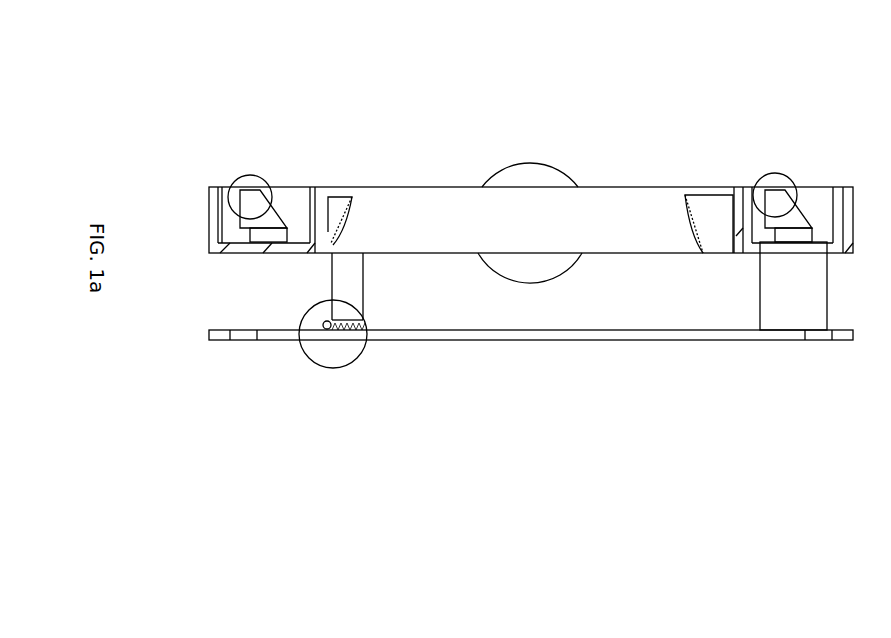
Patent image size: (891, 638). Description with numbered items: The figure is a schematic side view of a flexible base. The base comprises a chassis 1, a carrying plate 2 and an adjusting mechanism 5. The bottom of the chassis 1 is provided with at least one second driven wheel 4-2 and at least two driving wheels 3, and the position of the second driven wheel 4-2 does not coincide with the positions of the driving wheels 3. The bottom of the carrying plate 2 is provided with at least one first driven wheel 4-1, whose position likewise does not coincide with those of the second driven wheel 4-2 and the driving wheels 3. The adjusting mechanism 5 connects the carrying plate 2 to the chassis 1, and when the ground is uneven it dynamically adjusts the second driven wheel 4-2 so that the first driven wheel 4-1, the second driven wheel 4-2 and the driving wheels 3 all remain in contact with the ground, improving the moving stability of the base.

The chassis 1 is at (657, 187).
The carrying plate 2 is at (663, 340).
The driving wheels 3 is at (527, 165).
The first driven wheel 4-1 is at (787, 177).
The second driven wheel 4-2 is at (245, 173).
The adjusting mechanism 5 is at (323, 330).